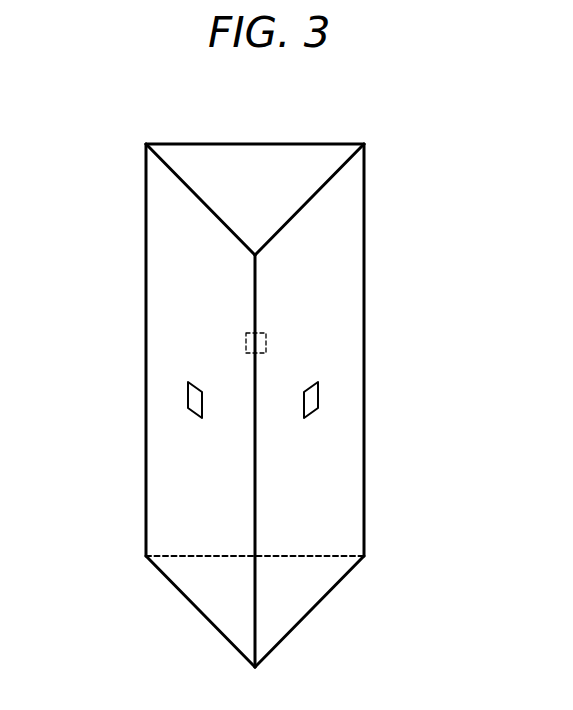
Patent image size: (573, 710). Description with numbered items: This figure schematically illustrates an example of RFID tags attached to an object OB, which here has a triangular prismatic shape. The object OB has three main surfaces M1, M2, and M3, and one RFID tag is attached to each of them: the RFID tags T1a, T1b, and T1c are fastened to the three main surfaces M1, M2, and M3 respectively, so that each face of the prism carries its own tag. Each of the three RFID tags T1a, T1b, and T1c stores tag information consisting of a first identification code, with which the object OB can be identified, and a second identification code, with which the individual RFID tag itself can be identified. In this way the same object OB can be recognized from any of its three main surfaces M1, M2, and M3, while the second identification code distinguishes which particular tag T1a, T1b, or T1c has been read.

The object OB is at (423, 143).
The main surface M1 is at (347, 245).
The main surface M2 is at (163, 227).
The main surface M3 is at (338, 510).
The RFID tag T1a is at (318, 392).
The RFID tag T1b is at (188, 394).
The RFID tag T1c is at (266, 344).